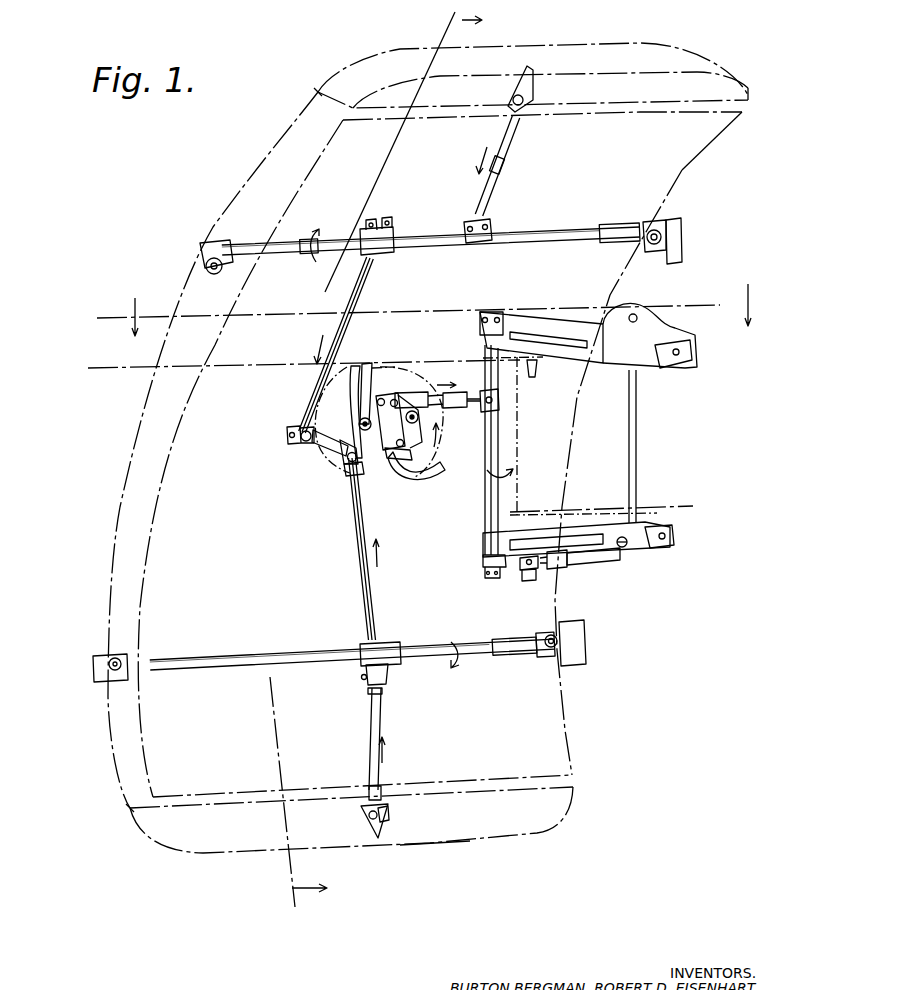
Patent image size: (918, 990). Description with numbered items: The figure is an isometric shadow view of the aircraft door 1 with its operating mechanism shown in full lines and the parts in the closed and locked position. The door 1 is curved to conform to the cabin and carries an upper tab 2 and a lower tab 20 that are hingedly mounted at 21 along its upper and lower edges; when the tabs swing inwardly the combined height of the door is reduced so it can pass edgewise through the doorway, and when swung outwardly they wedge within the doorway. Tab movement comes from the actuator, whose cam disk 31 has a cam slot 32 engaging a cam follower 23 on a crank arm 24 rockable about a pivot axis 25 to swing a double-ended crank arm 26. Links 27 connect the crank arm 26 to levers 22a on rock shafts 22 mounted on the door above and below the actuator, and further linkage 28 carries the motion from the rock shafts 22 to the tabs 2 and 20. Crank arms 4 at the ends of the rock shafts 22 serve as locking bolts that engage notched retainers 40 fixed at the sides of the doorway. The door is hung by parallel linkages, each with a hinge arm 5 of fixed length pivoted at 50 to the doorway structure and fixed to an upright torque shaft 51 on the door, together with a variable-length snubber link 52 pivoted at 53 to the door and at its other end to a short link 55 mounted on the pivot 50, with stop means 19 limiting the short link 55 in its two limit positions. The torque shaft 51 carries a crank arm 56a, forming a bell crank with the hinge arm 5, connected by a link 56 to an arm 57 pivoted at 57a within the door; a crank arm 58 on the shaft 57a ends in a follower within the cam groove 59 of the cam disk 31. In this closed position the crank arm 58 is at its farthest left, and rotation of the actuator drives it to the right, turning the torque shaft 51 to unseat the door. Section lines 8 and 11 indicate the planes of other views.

The door 1 is at (165, 566).
The upper tab 2 is at (701, 72).
The crank arms 4 is at (217, 274).
The hinge arm 5 is at (546, 330).
The section line 8 is at (376, 457).
The section line 11 is at (428, 296).
The stop means 19 is at (620, 549).
The lower tab 20 is at (436, 828).
The hinge mounting 21 is at (315, 93).
The rock shafts 22 is at (544, 234).
The levers 22a is at (389, 229).
The cam follower 23 is at (359, 418).
The crank arm 24 is at (337, 462).
The pivot axis 25 is at (330, 458).
The double-ended crank arm 26 is at (296, 438).
The links 27 is at (357, 293).
The linkage 28 is at (506, 160).
The cam disk 31 is at (400, 372).
The cam slot 32 is at (373, 364).
The retainers 40 is at (672, 220).
The pivot 50 is at (636, 428).
The torque shaft 51 is at (486, 487).
The snubber link 52 is at (586, 558).
The pivot 53 is at (520, 570).
The short link 55 is at (655, 540).
The link 56 is at (447, 406).
The crank arm 56a is at (485, 390).
The arm 57 is at (408, 394).
The shaft 57a is at (398, 462).
The crank arm 58 is at (433, 464).
The cam groove 59 is at (362, 489).